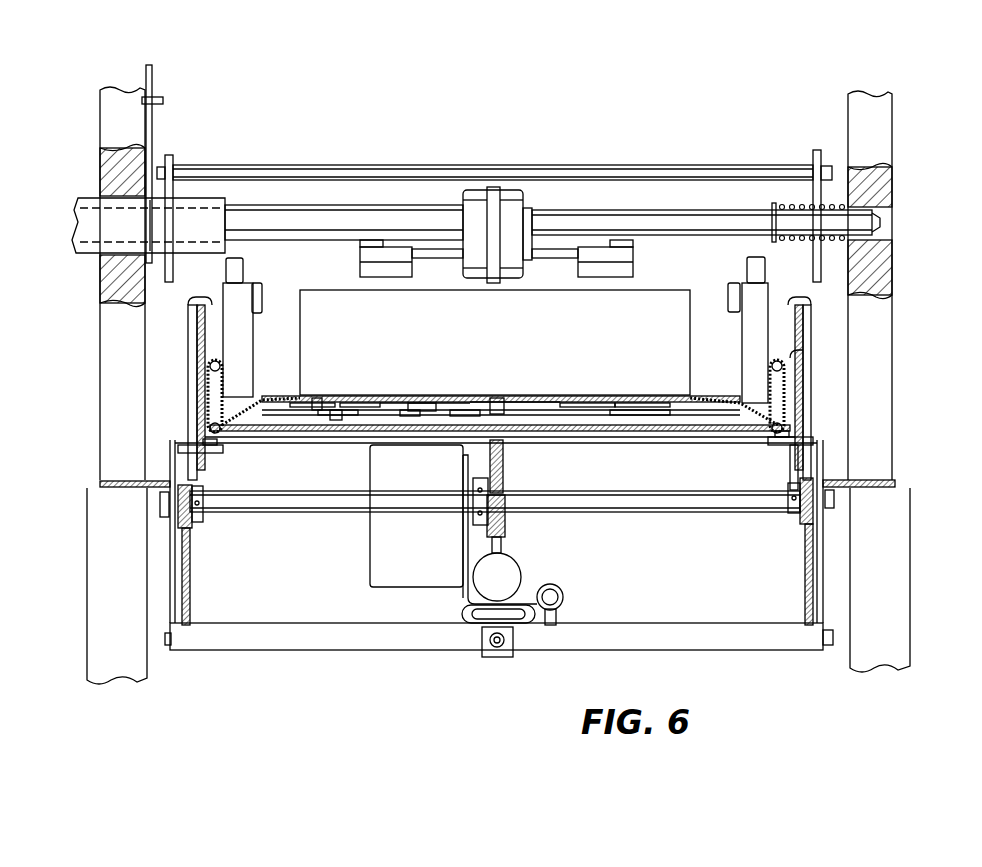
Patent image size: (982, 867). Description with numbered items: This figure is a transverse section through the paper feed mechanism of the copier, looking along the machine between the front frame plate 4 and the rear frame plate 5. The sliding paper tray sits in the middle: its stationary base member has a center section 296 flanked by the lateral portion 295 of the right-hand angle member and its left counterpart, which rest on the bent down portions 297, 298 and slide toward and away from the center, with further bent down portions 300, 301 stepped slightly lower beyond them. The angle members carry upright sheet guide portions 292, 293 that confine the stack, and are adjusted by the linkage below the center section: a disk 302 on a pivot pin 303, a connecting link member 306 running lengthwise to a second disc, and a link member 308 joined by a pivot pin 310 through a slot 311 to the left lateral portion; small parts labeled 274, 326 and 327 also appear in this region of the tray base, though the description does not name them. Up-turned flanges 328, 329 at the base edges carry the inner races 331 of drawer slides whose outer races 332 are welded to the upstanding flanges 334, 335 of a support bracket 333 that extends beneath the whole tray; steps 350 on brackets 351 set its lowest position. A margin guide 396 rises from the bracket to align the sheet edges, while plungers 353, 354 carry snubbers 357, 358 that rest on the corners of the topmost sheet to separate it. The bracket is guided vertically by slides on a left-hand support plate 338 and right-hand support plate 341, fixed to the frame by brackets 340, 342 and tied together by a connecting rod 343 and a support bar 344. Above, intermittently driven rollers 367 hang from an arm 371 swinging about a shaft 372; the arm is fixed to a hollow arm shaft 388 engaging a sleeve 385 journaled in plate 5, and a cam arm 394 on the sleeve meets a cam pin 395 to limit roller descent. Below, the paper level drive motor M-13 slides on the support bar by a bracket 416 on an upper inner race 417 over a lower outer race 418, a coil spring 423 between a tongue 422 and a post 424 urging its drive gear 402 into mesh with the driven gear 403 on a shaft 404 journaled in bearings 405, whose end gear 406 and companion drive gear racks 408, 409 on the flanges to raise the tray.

The frame plate 4 is at (893, 402).
The frame plate 5 is at (100, 405).
The connecting rod 343 is at (298, 165).
The cam arm 394 is at (152, 135).
The cam pin 395 is at (160, 100).
The sleeve 385 is at (225, 205).
The hollow arm shaft 388 is at (365, 209).
The shaft 372 is at (612, 214).
The arm 371 is at (525, 200).
The intermittently driven rollers 367 is at (388, 277).
The margin guide 396 is at (312, 290).
The plunger 353 is at (240, 258).
The plunger 354 is at (750, 262).
The snubber 357 is at (258, 283).
The snubber 358 is at (728, 290).
The upright sheet guide portion 292 is at (253, 332).
The upright sheet guide portion 293 is at (742, 360).
The outer race 332 is at (200, 360).
The upstanding flange 334 is at (200, 305).
The upstanding flange 335 is at (798, 305).
The left-hand support plate 338 is at (193, 340).
The right-hand support plate 341 is at (810, 338).
The up-turned flange 329 is at (792, 355).
The up-turned flange 328 is at (223, 380).
The inner race 331 is at (230, 406).
The bent down portion 300 is at (328, 410).
The support bracket 333 is at (560, 432).
The pivot pin 310 is at (292, 398).
The pin 274 is at (318, 396).
The plate 326 is at (368, 396).
The left side bent down portion 297 is at (405, 396).
The slide block 327 is at (418, 398).
The center section 296 is at (480, 398).
The pivot pin 303 is at (498, 398).
The right side bent down portion 298 is at (588, 396).
The lateral portion 295 is at (640, 396).
The slot 311 is at (340, 416).
The link member 308 is at (345, 417).
The connecting link member 306 is at (410, 408).
The disk 302 is at (460, 409).
The bent down portion 301 is at (640, 432).
The steps 350 is at (222, 452).
The bracket 351 is at (790, 468).
The bracket 340 is at (110, 482).
The bracket 342 is at (880, 482).
The support bar 344 is at (320, 651).
The shaft 404 is at (684, 512).
The gear 406 is at (203, 522).
The gear rack 408 is at (190, 565).
The gear rack 409 is at (805, 585).
The bearing 405 is at (160, 505).
The paper level drive motor M-13 is at (370, 578).
The driven gear 403 is at (503, 470).
The drive gear 402 is at (505, 515).
The tongue 422 is at (520, 585).
The bracket 416 is at (462, 598).
The upper inner race 417 is at (470, 625).
The lower outer race 418 is at (520, 633).
The coil spring 423 is at (563, 592).
The post 424 is at (556, 618).